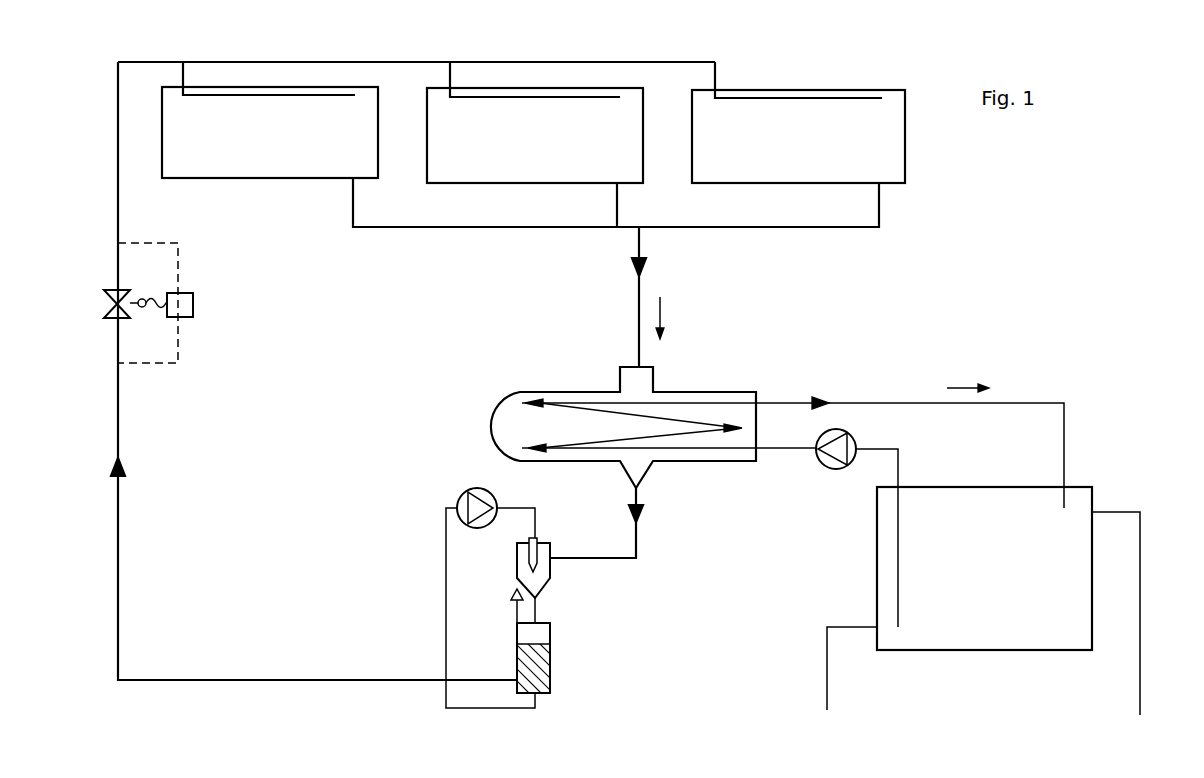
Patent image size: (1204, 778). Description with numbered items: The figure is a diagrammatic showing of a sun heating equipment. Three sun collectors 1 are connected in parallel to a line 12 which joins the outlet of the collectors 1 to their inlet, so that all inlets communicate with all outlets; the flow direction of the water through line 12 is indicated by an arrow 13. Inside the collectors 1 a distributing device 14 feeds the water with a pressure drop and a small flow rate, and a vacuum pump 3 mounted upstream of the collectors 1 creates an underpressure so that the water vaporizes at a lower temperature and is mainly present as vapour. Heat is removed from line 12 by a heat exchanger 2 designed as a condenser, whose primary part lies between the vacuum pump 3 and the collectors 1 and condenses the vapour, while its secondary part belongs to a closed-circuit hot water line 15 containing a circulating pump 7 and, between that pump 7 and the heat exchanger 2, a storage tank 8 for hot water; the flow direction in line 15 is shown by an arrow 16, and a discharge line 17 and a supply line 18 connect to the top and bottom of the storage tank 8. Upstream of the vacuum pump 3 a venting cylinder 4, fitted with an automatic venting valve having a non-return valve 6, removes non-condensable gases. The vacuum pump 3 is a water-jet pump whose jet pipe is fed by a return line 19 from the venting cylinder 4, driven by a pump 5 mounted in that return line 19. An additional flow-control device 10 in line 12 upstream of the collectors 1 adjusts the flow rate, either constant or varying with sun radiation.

The sun collector 1 is at (274, 170).
The distributing device 14 is at (286, 95).
The line 12 is at (117, 208).
The flow-control device 10 is at (108, 310).
The arrow 13 is at (672, 318).
The heat exchanger 2 is at (683, 396).
The hot water line 15 is at (860, 406).
The arrow 16 is at (967, 377).
The circulating pump 7 is at (836, 470).
The storage tank 8 is at (1020, 647).
The discharge line 17 is at (1140, 688).
The supply line 18 is at (827, 660).
The pump 5 is at (462, 493).
The vacuum pump 3 is at (549, 548).
The non-return valve 6 is at (511, 605).
The venting cylinder 4 is at (547, 668).
The return line 19 is at (445, 583).